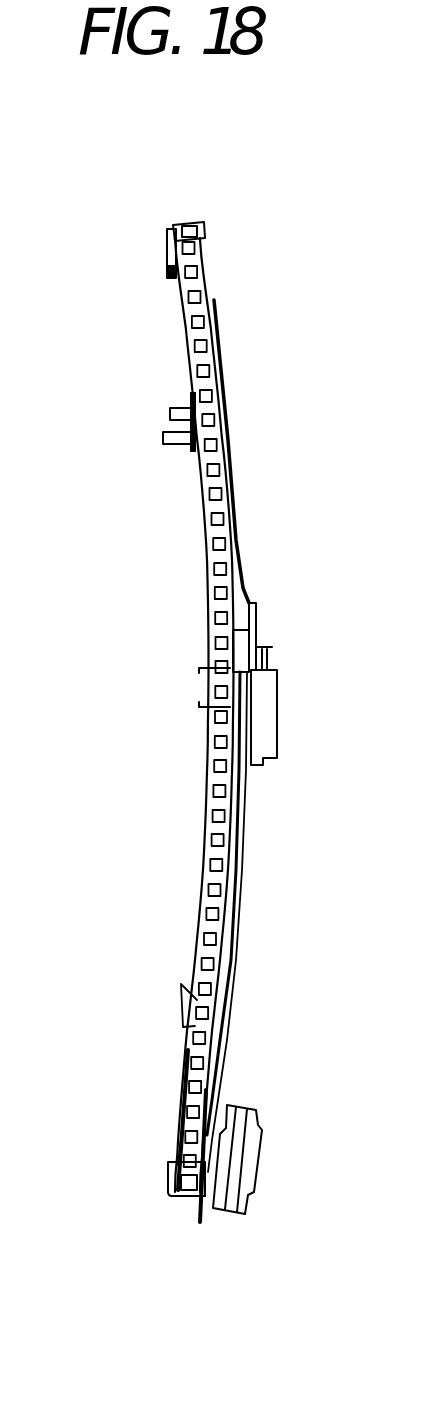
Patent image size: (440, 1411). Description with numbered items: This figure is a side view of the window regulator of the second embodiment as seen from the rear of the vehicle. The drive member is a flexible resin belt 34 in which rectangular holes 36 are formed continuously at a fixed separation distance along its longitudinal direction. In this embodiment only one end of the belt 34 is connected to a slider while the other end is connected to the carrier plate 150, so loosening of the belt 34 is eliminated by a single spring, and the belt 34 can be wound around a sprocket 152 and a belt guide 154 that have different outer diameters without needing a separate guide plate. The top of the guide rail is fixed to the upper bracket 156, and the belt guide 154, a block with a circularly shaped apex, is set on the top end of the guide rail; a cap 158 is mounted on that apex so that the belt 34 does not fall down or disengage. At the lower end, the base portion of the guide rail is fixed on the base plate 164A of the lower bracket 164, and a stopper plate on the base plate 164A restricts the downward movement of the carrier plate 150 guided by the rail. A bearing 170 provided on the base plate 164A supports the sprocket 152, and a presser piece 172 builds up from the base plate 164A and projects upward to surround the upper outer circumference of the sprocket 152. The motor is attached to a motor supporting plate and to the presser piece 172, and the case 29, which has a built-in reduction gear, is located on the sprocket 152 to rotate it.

The cap 158 is at (205, 228).
The belt guide 154 is at (168, 270).
The upper bracket 156 is at (193, 452).
The belt 34 is at (228, 491).
The carrier plate 150 is at (268, 703).
The rectangular holes 36 is at (210, 797).
The case 29 is at (240, 1103).
The base plate 164A is at (184, 1112).
The bearing 170 is at (179, 1146).
The sprocket 152 is at (185, 1165).
The lower bracket 164 is at (188, 1200).
The presser piece 172 is at (214, 1194).